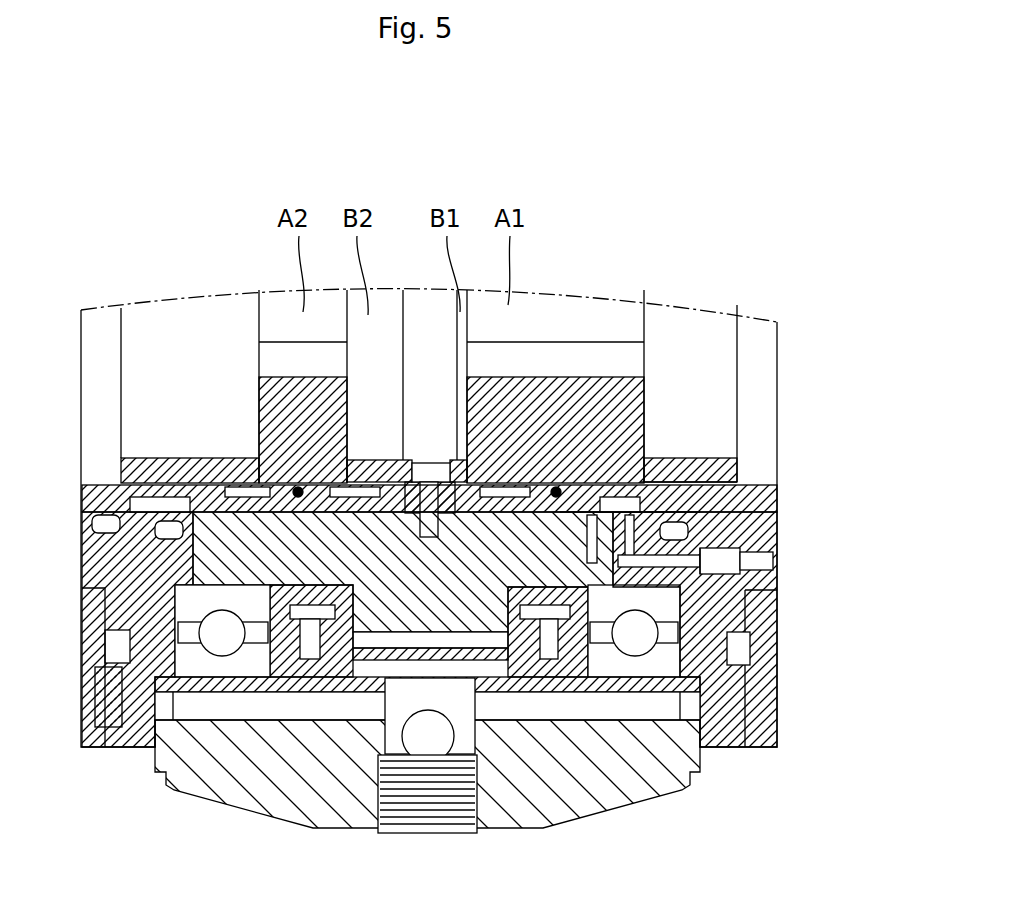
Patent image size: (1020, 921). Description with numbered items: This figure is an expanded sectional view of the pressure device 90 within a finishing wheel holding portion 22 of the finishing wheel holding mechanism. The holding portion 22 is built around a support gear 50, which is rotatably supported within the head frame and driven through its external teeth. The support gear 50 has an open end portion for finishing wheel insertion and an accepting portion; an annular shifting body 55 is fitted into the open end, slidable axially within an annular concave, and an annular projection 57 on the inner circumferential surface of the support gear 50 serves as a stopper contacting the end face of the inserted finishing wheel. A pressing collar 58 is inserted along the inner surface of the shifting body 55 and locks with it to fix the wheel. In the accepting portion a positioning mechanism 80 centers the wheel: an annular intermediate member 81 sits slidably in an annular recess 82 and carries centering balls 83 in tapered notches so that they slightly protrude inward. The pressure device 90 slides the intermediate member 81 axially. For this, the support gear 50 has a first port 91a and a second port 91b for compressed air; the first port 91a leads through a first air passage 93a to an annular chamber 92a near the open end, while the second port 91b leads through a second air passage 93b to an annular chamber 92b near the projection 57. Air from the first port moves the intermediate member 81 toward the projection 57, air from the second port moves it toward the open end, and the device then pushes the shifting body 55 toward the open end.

The finishing wheel holding portion 22 is at (507, 808).
The support gear 50 is at (398, 600).
The shifting body 55 is at (118, 488).
The projection 57 is at (391, 480).
The pressing collar 58 is at (200, 462).
The positioning mechanism 80 is at (563, 336).
The intermediate member 81 is at (612, 478).
The annular recess 82 is at (527, 478).
The centering balls 83 is at (570, 478).
The pressure device 90 is at (755, 623).
The first port 91a is at (776, 566).
The second port 91b is at (777, 580).
The annular chamber 92a is at (575, 508).
The annular chamber 92b is at (645, 484).
The first air passage 93a is at (643, 563).
The second air passage 93b is at (618, 610).